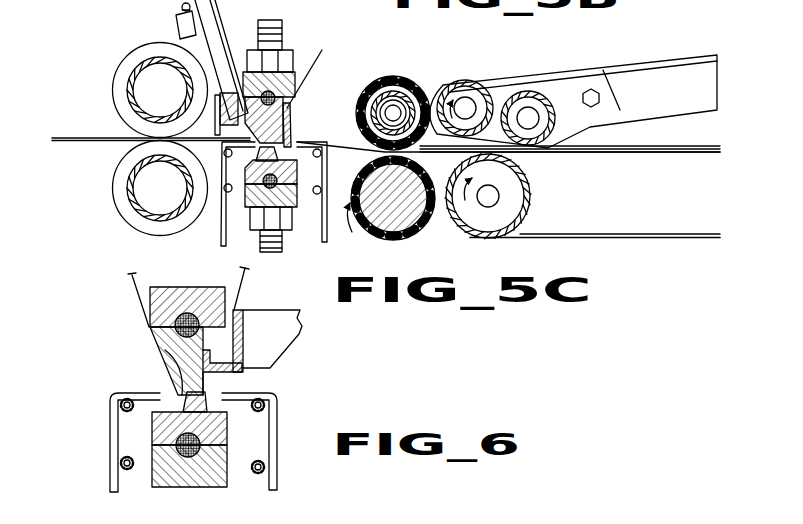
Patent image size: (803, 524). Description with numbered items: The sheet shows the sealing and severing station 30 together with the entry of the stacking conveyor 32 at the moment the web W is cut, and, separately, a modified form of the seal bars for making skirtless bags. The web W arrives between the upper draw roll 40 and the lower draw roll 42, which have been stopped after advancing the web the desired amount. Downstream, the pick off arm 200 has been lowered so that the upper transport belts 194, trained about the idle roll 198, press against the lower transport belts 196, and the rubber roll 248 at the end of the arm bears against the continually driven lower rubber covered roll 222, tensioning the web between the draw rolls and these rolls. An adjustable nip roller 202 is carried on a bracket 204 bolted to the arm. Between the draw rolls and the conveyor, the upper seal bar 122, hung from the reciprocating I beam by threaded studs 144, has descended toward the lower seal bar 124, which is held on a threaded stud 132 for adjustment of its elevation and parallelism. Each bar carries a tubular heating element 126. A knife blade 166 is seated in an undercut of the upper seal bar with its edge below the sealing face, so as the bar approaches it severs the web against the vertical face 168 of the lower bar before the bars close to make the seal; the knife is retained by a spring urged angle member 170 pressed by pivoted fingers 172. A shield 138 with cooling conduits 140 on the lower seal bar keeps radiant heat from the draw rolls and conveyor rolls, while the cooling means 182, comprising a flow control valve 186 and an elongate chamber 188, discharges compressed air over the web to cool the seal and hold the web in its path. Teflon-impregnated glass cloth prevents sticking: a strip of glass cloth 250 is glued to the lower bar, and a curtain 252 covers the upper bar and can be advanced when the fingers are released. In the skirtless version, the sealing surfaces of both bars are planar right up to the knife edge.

In FIG. 5C, the web W is at (75, 138).
In FIG. 5C, the sealing and severing station 30 is at (340, 64).
In FIG. 5C, the stacking conveyor 32 is at (628, 57).
In FIG. 5C, the upper draw roll 40 is at (133, 60).
In FIG. 5C, the lower draw roll 42 is at (118, 188).
In FIG. 5C, the upper seal bar 122 is at (287, 109).
In FIG. 6, the upper seal bar 122 is at (165, 352).
In FIG. 5C, the lower seal bar 124 is at (297, 165).
In FIG. 6, the lower seal bar 124 is at (218, 428).
In FIG. 5C, the tubular heating element 126 is at (280, 97).
In FIG. 6, the tubular heating element 126 is at (187, 320).
In FIG. 5C, the threaded stud 132 is at (280, 251).
In FIG. 5C, the shield 138 is at (218, 210).
In FIG. 6, the shield 138 is at (113, 432).
In FIG. 6, the conduits 140 is at (120, 410).
In FIG. 5C, the threaded studs 144 is at (282, 30).
In FIG. 5C, the knife blade 166 is at (292, 124).
In FIG. 6, the knife blade 166 is at (218, 384).
In FIG. 5C, the vertical face 168 is at (267, 154).
In FIG. 6, the vertical face 168 is at (207, 402).
In FIG. 6, the angle member 170 is at (243, 329).
In FIG. 6, the fingers 172 is at (280, 351).
In FIG. 5C, the cooling means 182 is at (170, 37).
In FIG. 5C, the flow control valve 186 is at (180, 11).
In FIG. 5C, the chamber 188 is at (218, 14).
In FIG. 5C, the upper transport belts 194 is at (640, 147).
In FIG. 5C, the lower transport belts 196 is at (575, 148).
In FIG. 5C, the idle roll 198 is at (469, 81).
In FIG. 5C, the pick off arm 200 is at (668, 88).
In FIG. 5C, the adjustable nip roller 202 is at (520, 107).
In FIG. 5C, the bracket 204 is at (610, 104).
In FIG. 5C, the lower rubber covered roll 222 is at (396, 241).
In FIG. 5C, the rubber roll 248 is at (406, 83).
In FIG. 6, the strip of glass cloth 250 is at (177, 385).
In FIG. 5C, the curtain 252 is at (306, 78).
In FIG. 6, the curtain 252 is at (137, 305).